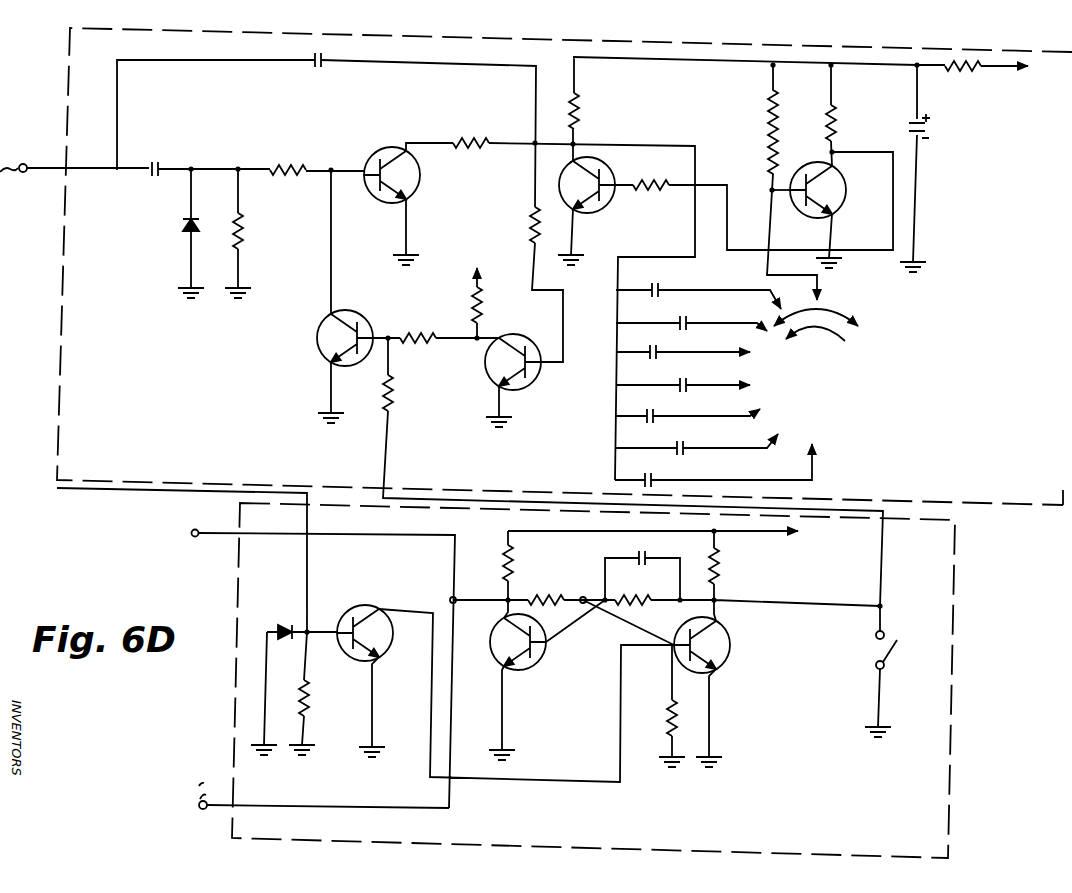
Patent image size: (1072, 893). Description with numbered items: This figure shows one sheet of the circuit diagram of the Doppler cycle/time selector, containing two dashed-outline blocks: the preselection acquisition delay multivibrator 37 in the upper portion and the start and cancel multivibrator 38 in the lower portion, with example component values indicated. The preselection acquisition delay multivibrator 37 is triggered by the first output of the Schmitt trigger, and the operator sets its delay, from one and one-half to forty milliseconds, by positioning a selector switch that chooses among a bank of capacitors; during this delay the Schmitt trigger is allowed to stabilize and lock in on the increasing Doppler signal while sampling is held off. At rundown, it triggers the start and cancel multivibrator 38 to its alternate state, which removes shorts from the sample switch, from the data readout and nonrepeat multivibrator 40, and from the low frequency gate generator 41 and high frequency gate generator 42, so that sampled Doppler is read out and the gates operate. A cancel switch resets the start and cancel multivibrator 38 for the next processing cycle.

The preselection acquisition delay multivibrator 37 is at (1030, 506).
The start and cancel multivibrator 38 is at (950, 801).
The data readout and nonrepeat multivibrator 40 is at (238, 765).
The low frequency gate generator 41 is at (133, 776).
The high frequency gate generator 42 is at (144, 776).